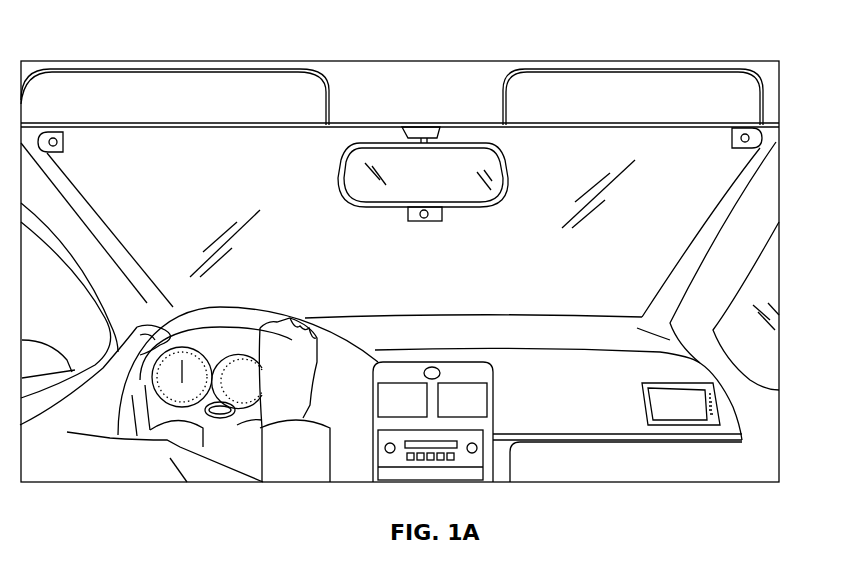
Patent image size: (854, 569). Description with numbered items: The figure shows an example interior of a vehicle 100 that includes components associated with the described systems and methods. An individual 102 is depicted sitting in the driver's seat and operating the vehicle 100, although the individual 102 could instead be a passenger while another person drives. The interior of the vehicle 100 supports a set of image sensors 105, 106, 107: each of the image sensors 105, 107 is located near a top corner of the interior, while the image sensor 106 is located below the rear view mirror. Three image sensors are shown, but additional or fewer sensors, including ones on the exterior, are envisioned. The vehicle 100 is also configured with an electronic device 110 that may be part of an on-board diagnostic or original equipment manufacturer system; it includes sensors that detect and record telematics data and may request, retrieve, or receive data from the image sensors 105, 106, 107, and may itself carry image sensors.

The vehicle 100 is at (473, 30).
The individual 102 is at (79, 467).
The image sensor 105 is at (63, 142).
The image sensor 106 is at (430, 221).
The image sensor 107 is at (732, 140).
The electronic device 110 is at (462, 372).